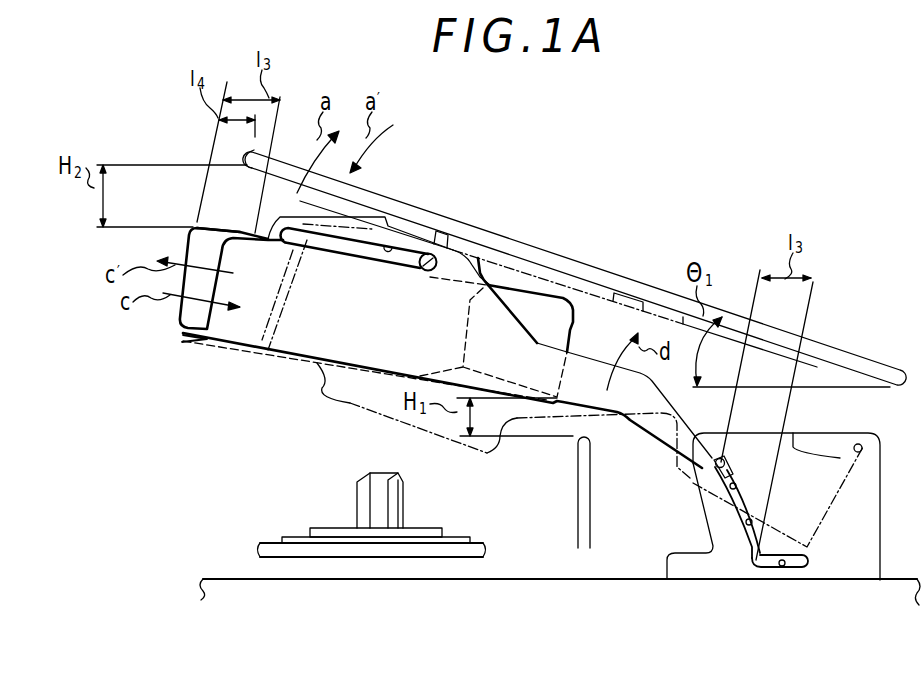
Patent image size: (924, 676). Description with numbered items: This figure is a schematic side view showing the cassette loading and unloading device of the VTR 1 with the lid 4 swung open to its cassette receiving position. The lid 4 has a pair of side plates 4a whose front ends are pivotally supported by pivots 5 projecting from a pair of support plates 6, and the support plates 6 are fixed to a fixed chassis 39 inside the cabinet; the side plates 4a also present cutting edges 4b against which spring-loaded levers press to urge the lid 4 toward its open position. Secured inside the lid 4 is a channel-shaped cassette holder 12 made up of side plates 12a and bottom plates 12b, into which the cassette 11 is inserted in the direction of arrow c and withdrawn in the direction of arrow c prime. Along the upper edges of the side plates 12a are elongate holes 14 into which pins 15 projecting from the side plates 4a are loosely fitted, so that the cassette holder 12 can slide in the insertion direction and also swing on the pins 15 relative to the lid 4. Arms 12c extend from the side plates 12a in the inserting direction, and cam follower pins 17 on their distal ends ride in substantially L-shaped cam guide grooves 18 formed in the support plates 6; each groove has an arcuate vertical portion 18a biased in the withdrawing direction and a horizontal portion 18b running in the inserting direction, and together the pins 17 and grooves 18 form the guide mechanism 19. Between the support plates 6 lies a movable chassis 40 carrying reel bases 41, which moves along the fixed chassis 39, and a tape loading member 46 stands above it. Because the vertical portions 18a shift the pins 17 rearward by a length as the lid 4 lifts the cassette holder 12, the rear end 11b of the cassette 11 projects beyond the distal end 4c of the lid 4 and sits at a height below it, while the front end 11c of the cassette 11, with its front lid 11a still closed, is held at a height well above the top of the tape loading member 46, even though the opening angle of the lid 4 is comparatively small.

The VTR 1 is at (167, 433).
The lid 4 is at (525, 246).
The side plates 4a is at (617, 306).
The cutting edges 4b is at (877, 488).
The distal end of the lid 4c is at (250, 147).
The pivots 5 is at (869, 436).
The support plates 6 is at (864, 527).
The cassette 11 is at (188, 313).
The front lid of the cassette 11a is at (543, 313).
The rear end of the cassette 11b is at (193, 237).
The front end of the cassette 11c is at (585, 327).
The cassette holder 12 is at (250, 316).
The side plates of the cassette holder 12a is at (270, 347).
The bottom plates 12b is at (217, 343).
The arms 12c is at (660, 430).
The elongate holes 14 is at (399, 246).
The pins 15 is at (437, 256).
The cam follower pins 17 is at (700, 480).
The cam guide grooves 18 is at (743, 531).
The vertical portions of the guide grooves 18a is at (730, 500).
The horizontal portions of the guide grooves 18b is at (783, 568).
The guide mechanism 19 is at (738, 547).
The fixed chassis 39 is at (225, 576).
The movable chassis 40 is at (270, 543).
The reel bases 41 is at (383, 498).
The tape loading member 46 is at (580, 467).